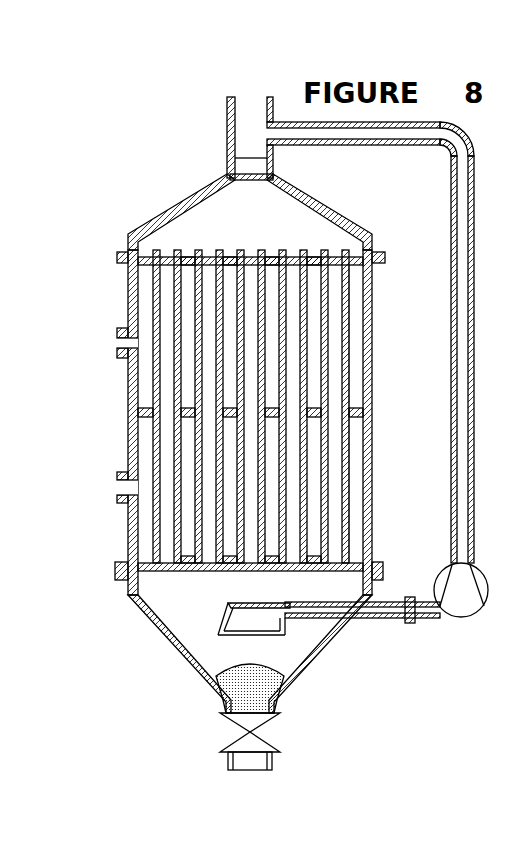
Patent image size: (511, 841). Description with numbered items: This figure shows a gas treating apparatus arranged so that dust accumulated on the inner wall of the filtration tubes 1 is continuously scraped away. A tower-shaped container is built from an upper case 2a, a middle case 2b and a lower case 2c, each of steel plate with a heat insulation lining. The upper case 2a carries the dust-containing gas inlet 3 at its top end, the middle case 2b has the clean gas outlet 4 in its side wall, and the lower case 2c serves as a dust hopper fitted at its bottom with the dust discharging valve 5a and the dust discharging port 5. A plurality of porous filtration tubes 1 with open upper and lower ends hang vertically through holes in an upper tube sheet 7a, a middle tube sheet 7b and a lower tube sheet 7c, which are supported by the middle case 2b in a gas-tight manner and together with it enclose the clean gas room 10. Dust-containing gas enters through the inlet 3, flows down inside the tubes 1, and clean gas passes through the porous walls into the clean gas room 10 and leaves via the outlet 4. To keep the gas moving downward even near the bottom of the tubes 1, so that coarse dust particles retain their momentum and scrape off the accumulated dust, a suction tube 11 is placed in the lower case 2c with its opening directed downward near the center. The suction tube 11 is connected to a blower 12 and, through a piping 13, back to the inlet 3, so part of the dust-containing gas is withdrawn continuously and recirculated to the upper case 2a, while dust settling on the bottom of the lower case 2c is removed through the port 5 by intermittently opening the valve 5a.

The filtration tube 1 is at (350, 290).
The upper case 2a is at (330, 212).
The middle case 2b is at (369, 315).
The lower case 2c is at (309, 662).
The dust-containing gas inlet 3 is at (275, 160).
The clean gas outlet 4 is at (118, 340).
The dust discharging port 5 is at (280, 723).
The dust discharging valve 5a is at (276, 745).
The upper tube sheet 7a is at (150, 257).
The middle tube sheet 7b is at (148, 410).
The lower tube sheet 7c is at (143, 566).
The clean gas room 10 is at (355, 488).
The suction tube 11 is at (375, 619).
The blower 12 is at (440, 572).
The piping 13 is at (455, 385).